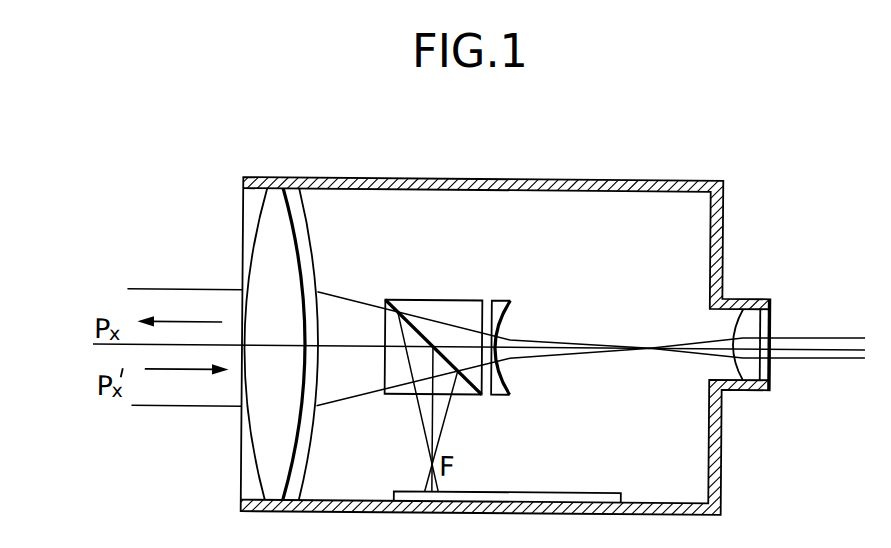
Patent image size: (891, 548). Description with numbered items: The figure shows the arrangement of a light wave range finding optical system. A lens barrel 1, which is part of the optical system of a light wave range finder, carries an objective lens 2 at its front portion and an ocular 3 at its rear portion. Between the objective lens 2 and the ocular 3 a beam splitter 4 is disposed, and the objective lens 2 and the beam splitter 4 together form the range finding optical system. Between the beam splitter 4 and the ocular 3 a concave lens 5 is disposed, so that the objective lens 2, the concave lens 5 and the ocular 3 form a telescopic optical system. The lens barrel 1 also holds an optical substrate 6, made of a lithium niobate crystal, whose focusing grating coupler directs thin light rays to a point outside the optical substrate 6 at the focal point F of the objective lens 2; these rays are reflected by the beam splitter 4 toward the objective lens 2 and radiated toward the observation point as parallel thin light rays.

The lens barrel 1 is at (614, 180).
The objective lens 2 is at (265, 242).
The ocular 3 is at (753, 327).
The beam splitter 4 is at (441, 305).
The concave lens 5 is at (501, 305).
The optical substrate 6 is at (582, 500).